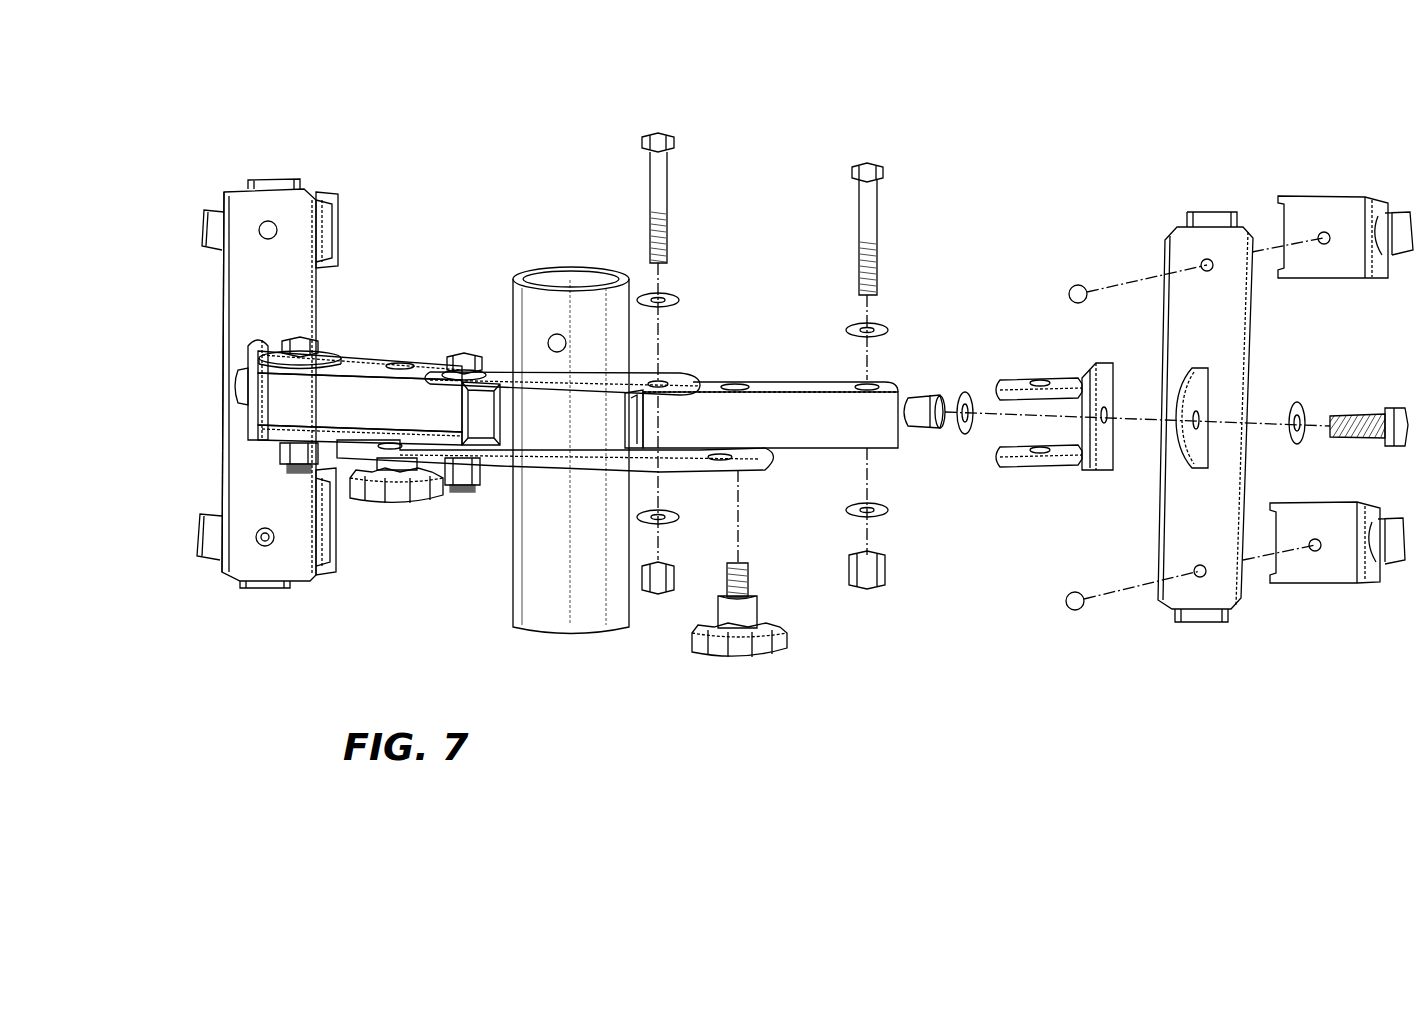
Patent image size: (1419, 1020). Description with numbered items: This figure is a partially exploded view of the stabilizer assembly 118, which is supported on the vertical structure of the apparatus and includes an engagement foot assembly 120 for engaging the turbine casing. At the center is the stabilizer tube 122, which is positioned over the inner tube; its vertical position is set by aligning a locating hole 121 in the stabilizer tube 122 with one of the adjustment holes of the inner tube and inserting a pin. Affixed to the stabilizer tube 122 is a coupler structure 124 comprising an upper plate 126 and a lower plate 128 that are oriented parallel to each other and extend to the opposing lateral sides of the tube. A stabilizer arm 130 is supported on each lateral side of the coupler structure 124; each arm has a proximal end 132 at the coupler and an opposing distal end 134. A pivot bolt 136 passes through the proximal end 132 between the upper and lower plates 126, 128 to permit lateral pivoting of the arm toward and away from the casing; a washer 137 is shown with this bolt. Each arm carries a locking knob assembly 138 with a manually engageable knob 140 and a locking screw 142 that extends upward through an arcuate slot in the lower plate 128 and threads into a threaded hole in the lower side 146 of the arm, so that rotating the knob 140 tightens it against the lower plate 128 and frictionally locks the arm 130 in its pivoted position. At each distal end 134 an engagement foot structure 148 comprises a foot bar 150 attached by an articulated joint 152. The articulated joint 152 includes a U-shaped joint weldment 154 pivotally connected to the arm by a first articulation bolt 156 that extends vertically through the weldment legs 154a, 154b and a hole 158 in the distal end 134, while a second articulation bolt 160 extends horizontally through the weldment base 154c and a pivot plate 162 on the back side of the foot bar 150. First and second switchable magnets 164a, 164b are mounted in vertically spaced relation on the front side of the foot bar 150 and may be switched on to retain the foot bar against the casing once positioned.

The stabilizer assembly 118 is at (450, 235).
The engagement foot assembly 120 is at (218, 598).
The locating hole 121 is at (552, 338).
The stabilizer tube 122 is at (545, 625).
The coupler structure 124 is at (480, 350).
The upper plate 126 is at (645, 372).
The lower plate 128 is at (688, 472).
The stabilizer arm 130 is at (348, 395).
The proximal end 132 is at (430, 418).
The distal end 134 is at (262, 385).
The pivot bolt 136 is at (662, 172).
The washer 137 is at (665, 380).
The locking knob assembly 138 is at (388, 512).
The knob 140 is at (405, 500).
The locking screw 142 is at (752, 585).
The lower side 146 is at (832, 450).
The engagement foot structure 148 is at (238, 180).
The foot bar 150 is at (228, 298).
The articulated joint 152 is at (955, 465).
The U-shaped joint weldment 154 is at (654, 428).
The weldment leg 154a is at (1028, 378).
The weldment leg 154b is at (1030, 467).
The weldment base 154c is at (1110, 375).
The first articulation bolt 156 is at (304, 338).
The hole 158 is at (858, 384).
The second articulation bolt 160 is at (1393, 408).
The pivot plate 162 is at (1205, 395).
The first switchable magnet 164a is at (330, 192).
The second switchable magnet 164b is at (326, 578).